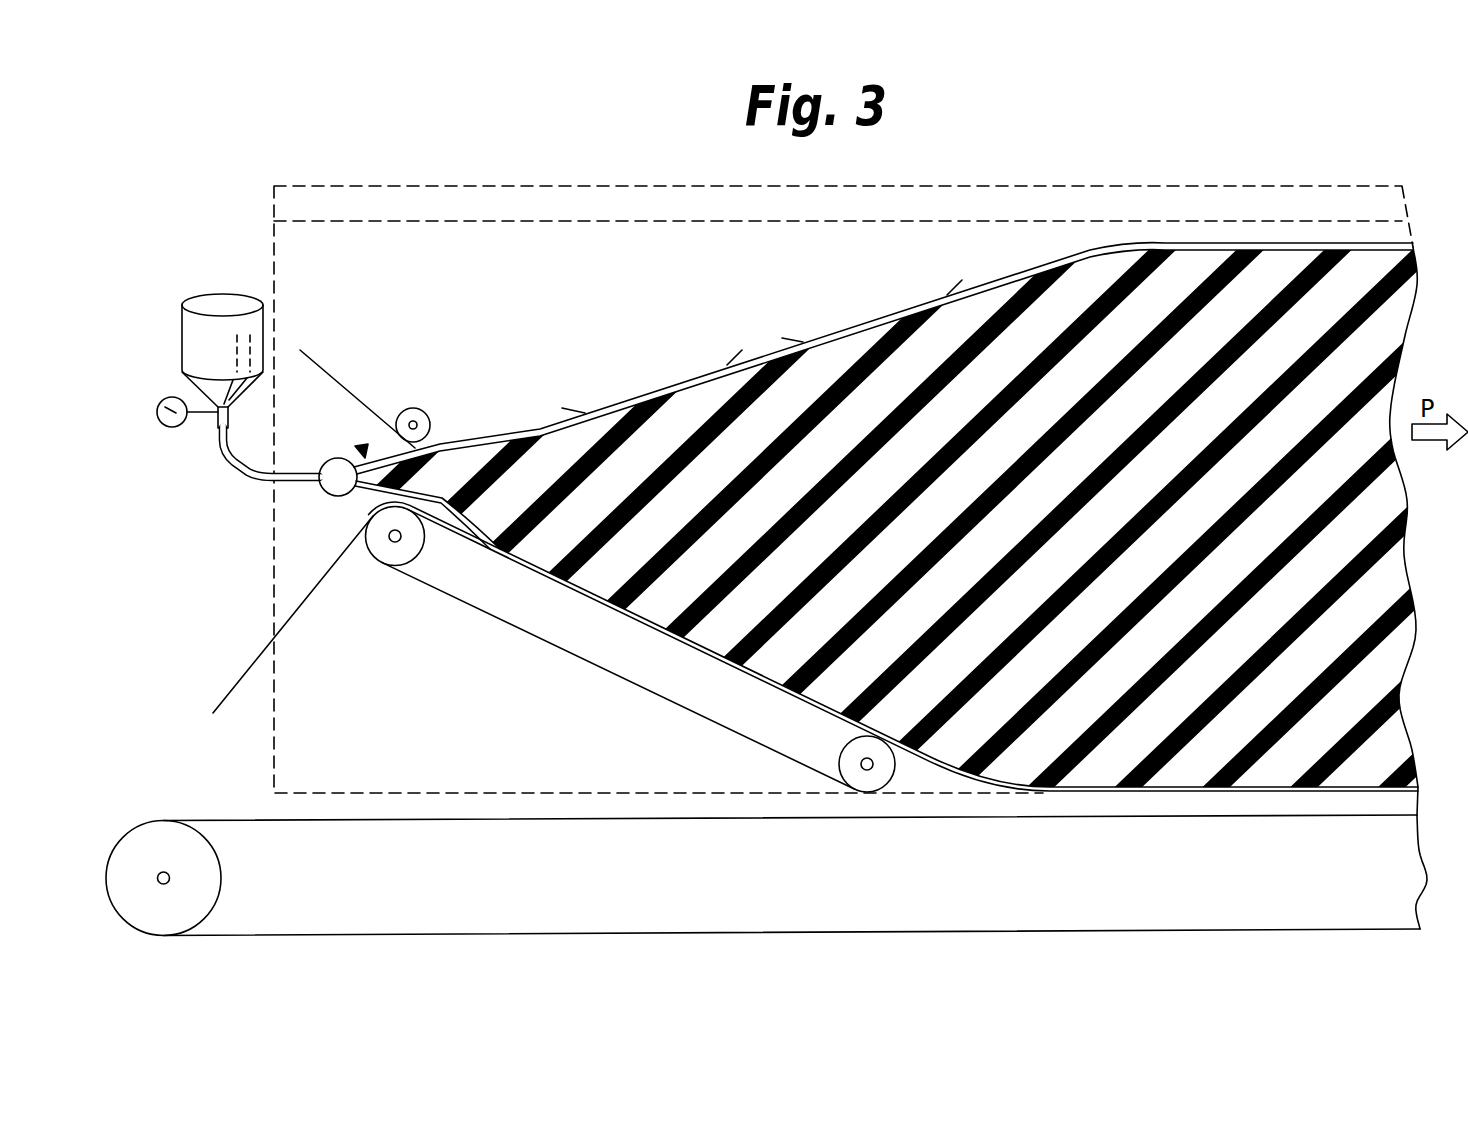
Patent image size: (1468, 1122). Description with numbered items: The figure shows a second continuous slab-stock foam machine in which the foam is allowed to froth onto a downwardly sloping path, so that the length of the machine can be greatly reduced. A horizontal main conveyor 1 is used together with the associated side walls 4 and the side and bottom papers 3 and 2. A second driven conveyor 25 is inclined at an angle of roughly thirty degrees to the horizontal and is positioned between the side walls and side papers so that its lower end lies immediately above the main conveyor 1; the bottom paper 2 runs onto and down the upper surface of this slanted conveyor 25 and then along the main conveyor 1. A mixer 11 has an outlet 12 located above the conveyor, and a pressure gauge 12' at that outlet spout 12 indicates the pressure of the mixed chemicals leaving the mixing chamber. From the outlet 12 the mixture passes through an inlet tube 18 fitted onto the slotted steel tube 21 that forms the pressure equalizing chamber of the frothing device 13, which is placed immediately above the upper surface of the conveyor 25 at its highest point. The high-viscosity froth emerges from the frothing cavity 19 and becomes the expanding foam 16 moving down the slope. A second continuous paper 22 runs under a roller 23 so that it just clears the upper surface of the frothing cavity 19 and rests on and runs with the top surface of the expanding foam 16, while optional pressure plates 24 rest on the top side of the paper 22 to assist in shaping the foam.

The main conveyor 1 is at (215, 820).
The bottom paper 2 is at (253, 657).
The side paper 3 is at (406, 221).
The side walls 4 is at (366, 186).
The mixer 11 is at (195, 344).
The outlet 12 is at (183, 433).
The pressure gauge 12' is at (153, 413).
The frothing device 13 is at (361, 448).
The expanding foam 16 is at (1112, 278).
The inlet tube 18 is at (240, 466).
The frothing cavity 19 is at (440, 447).
The steel tube 21 is at (330, 489).
The second continuous paper 22 is at (300, 350).
The roller 23 is at (413, 408).
The pressure plates 24 is at (660, 388).
The second driven conveyor 25 is at (523, 633).